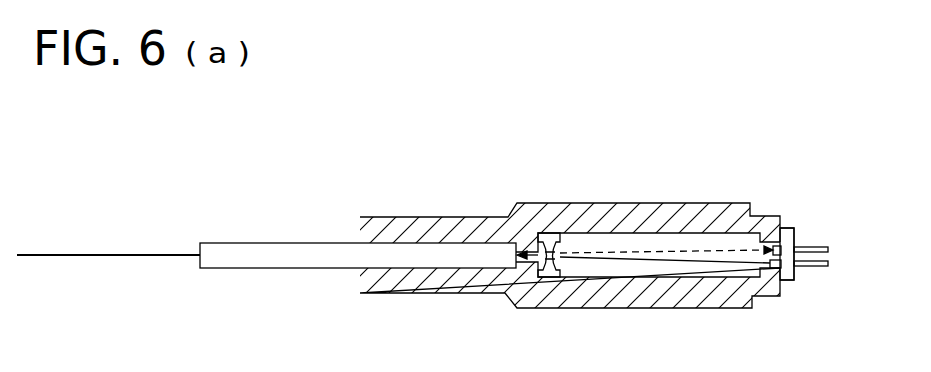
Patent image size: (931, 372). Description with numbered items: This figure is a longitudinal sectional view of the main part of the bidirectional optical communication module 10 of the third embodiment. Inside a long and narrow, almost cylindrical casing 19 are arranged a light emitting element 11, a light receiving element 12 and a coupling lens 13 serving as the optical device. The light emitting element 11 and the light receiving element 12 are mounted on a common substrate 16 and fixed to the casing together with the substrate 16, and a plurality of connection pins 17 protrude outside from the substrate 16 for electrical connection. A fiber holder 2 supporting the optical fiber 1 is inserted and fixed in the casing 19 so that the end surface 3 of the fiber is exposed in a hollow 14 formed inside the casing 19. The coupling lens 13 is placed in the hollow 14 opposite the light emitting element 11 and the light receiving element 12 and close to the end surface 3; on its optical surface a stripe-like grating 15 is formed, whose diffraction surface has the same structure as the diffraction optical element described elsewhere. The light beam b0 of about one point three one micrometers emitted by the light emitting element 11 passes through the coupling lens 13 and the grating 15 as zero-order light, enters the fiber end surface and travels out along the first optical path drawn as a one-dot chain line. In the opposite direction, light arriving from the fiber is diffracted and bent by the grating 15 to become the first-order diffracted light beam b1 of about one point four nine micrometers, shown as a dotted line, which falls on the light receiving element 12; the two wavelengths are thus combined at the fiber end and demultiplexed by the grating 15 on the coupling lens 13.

The diffraction optical element 1 is at (108, 253).
The ferrule 2 is at (256, 242).
The fiber end face 3 is at (511, 287).
The bidirectional optical communication module 10 is at (586, 171).
The light emitting element 11 is at (776, 268).
The light receiving element 12 is at (786, 228).
The coupling lens 13 is at (550, 278).
The hollow 14 is at (627, 268).
The stripe-like grating 15 is at (538, 233).
The common substrate 16 is at (794, 278).
The lead pins 17 is at (818, 249).
The casing 19 is at (625, 203).
The light beam b0 is at (713, 263).
The 1-order diffracted light beam b1 is at (708, 252).